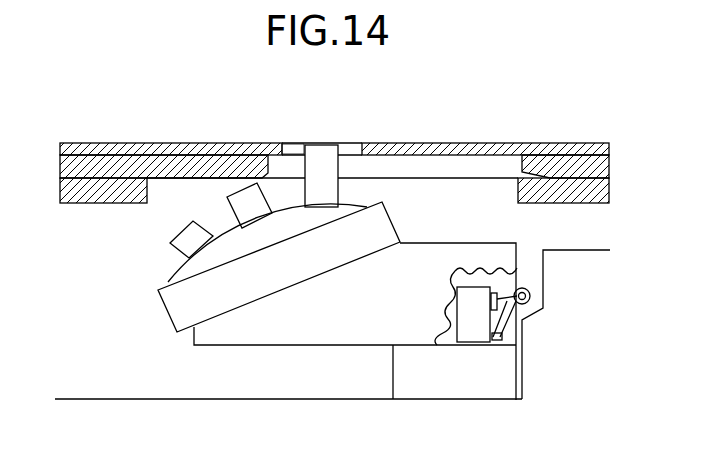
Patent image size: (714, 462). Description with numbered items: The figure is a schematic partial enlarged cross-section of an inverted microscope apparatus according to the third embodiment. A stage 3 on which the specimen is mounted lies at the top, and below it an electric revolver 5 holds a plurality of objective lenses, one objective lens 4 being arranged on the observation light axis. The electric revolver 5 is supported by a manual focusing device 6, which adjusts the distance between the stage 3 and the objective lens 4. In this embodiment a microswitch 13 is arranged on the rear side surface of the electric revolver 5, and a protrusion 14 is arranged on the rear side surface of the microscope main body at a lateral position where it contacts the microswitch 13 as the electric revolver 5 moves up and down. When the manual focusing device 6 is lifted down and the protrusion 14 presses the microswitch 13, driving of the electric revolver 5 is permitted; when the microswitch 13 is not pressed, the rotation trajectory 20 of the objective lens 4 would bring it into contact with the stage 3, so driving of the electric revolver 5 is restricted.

The stage 3 is at (125, 141).
The rotation trajectory 20 is at (298, 147).
The objective lens 4 is at (318, 142).
The electric revolver 5 is at (181, 297).
The microswitch 13 is at (472, 287).
The protrusion 14 is at (541, 312).
The manual focusing device 6 is at (490, 368).